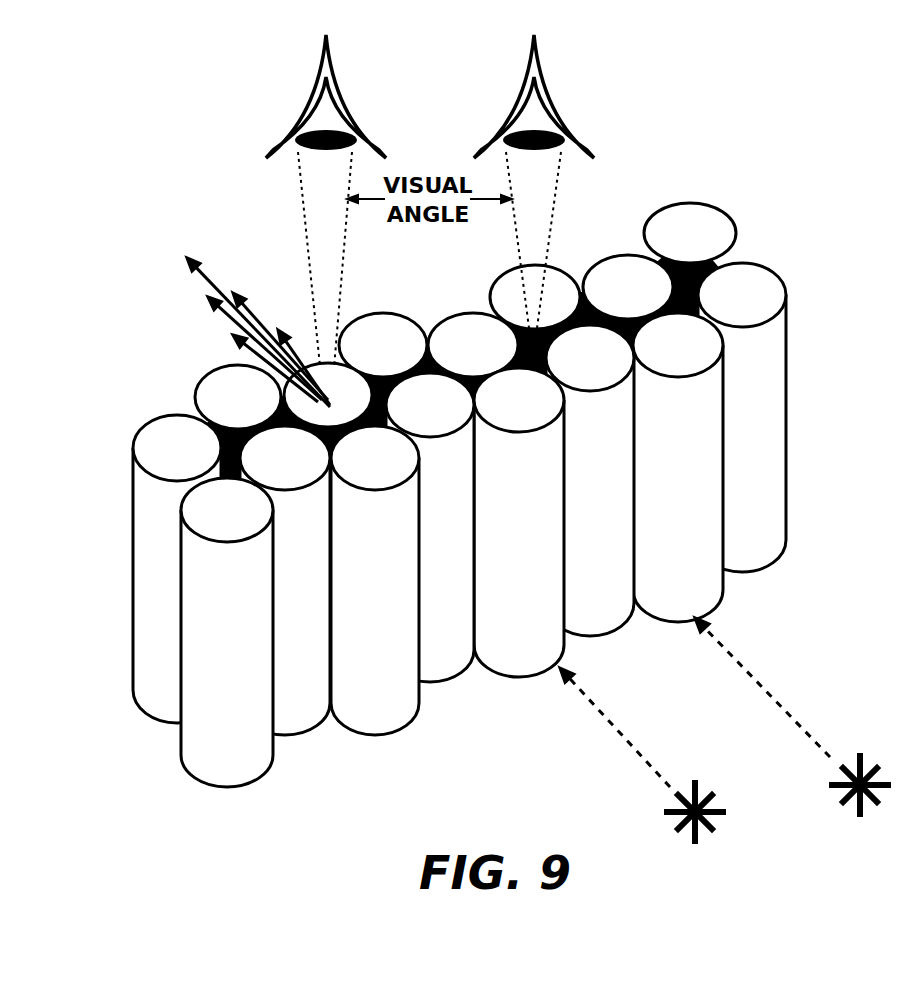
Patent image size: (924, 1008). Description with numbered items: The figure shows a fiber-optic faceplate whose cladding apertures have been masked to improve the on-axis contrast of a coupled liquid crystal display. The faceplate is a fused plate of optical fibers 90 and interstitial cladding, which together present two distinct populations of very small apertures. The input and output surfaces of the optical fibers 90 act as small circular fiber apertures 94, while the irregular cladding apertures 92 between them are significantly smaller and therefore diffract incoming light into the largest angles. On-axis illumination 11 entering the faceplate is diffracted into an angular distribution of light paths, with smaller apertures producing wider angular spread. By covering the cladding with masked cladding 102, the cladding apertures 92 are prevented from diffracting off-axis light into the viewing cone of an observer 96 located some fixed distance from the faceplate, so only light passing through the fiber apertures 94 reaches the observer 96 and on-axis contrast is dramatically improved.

The optical fibers 90 is at (148, 707).
The cladding apertures 92 is at (228, 428).
The fiber apertures 94 is at (197, 505).
The observer 96 is at (315, 82).
The masked cladding 102 is at (710, 265).
The on-axis illumination 11 is at (713, 834).